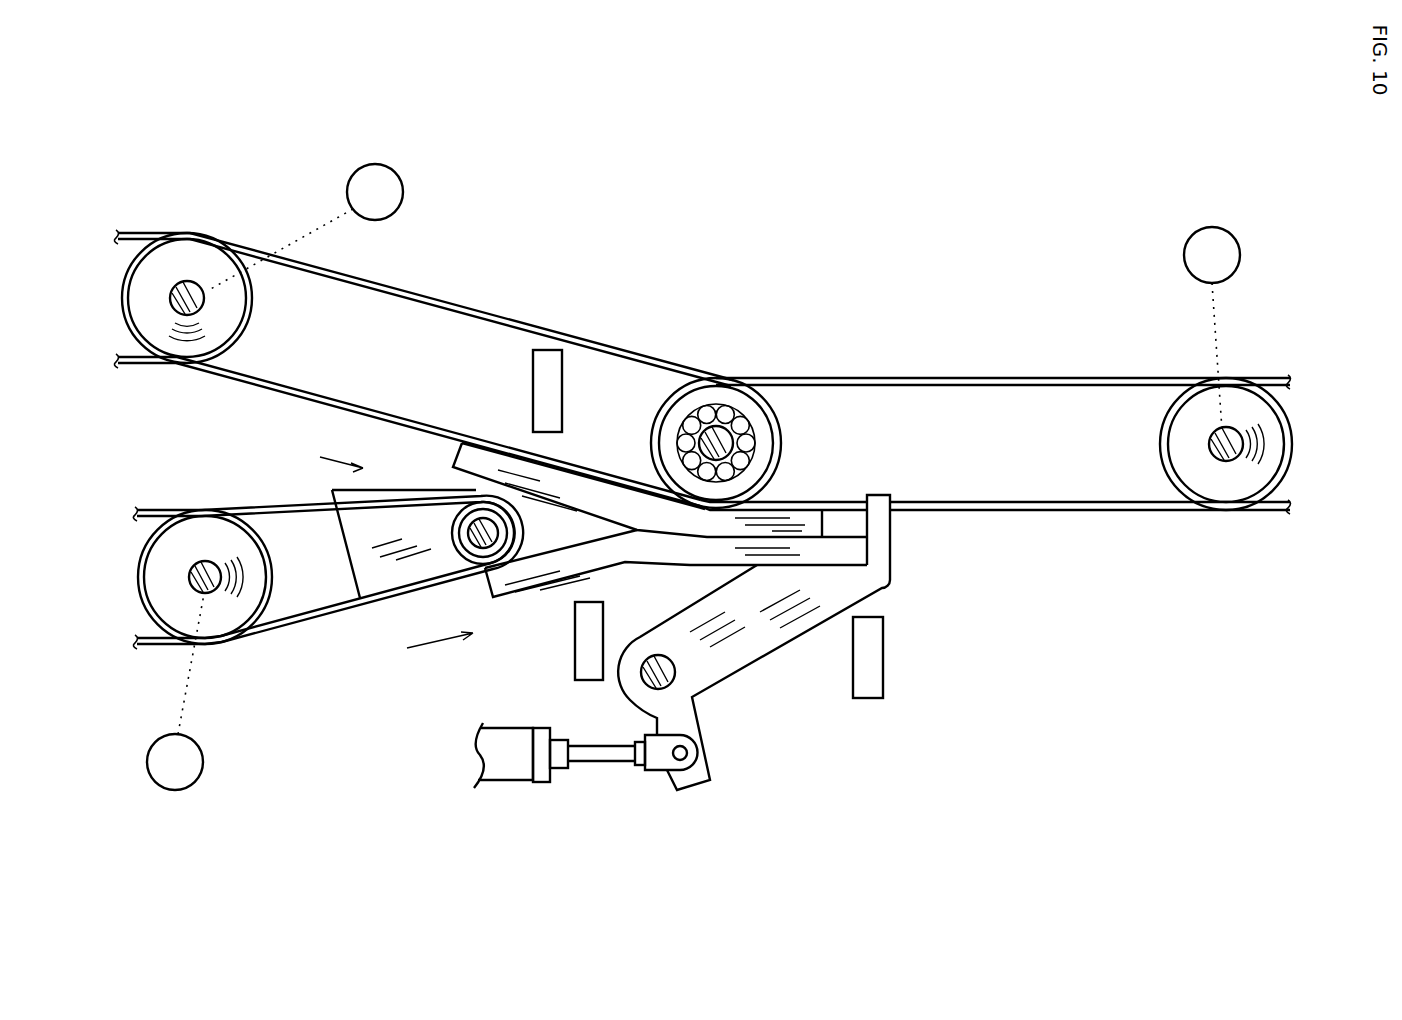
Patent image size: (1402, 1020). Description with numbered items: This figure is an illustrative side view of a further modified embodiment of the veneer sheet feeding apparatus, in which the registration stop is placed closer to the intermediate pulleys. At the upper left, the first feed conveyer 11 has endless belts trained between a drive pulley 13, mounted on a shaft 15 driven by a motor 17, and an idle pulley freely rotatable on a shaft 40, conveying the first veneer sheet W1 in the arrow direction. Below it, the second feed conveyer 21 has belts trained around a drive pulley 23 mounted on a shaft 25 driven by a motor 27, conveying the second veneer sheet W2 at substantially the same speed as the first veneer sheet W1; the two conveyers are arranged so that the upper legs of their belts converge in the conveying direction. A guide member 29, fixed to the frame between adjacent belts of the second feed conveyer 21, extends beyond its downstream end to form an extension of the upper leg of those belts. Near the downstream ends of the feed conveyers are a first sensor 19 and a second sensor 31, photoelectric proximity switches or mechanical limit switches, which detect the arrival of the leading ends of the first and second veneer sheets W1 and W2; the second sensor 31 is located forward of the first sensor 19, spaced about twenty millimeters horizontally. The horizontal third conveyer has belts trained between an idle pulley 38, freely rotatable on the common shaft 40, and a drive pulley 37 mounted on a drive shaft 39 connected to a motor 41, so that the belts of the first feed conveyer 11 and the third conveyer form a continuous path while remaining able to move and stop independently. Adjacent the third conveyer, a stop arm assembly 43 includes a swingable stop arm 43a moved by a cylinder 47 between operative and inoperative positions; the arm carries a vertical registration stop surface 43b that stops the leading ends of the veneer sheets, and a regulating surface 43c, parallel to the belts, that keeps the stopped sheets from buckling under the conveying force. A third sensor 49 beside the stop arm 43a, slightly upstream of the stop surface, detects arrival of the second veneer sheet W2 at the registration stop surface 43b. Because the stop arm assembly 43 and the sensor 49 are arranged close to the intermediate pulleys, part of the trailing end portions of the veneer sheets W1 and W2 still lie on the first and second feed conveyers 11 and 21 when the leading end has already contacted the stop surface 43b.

The first feed conveyer 11 is at (433, 425).
The drive pulley 13 is at (236, 314).
The shaft 15 is at (190, 282).
The motor 17 is at (404, 196).
The first sensor 19 is at (548, 390).
The second feed conveyer 21 is at (331, 606).
The drive pulley 23 is at (178, 545).
The shaft 25 is at (197, 592).
The motor 27 is at (204, 769).
The guide member 29 is at (550, 592).
The second sensor 31 is at (585, 674).
The drive pulley 37 is at (1184, 447).
The idle pulley 38 is at (673, 428).
The drive shaft 39 is at (1242, 428).
The shaft 40 is at (716, 420).
The motor 41 is at (1184, 253).
The stop arm assembly 43 is at (859, 655).
The stop arm 43a is at (783, 617).
The registration stop surface 43b is at (843, 535).
The regulating surface 43c is at (845, 563).
The cylinder 47 is at (500, 766).
The third sensor 49 is at (872, 680).
The first veneer sheet W1 is at (454, 453).
The second veneer sheet W2 is at (505, 590).